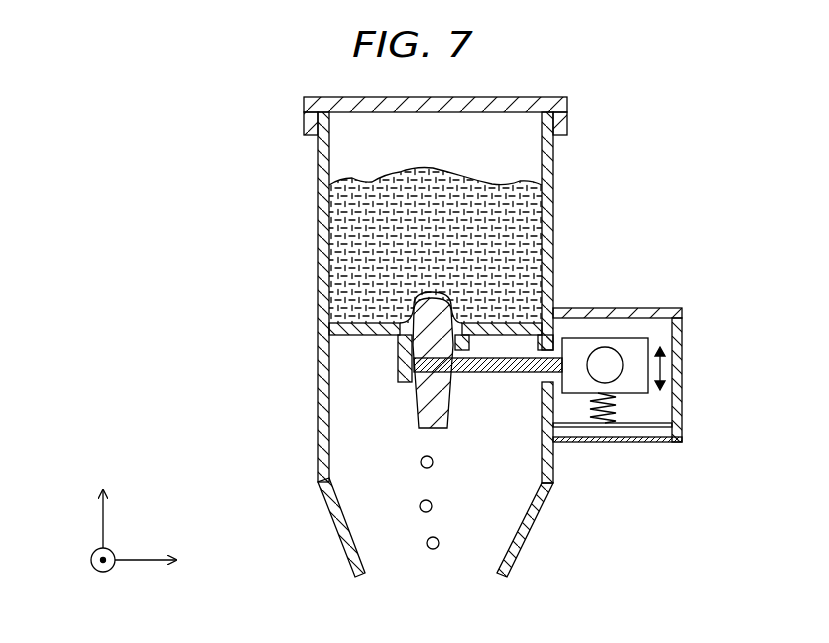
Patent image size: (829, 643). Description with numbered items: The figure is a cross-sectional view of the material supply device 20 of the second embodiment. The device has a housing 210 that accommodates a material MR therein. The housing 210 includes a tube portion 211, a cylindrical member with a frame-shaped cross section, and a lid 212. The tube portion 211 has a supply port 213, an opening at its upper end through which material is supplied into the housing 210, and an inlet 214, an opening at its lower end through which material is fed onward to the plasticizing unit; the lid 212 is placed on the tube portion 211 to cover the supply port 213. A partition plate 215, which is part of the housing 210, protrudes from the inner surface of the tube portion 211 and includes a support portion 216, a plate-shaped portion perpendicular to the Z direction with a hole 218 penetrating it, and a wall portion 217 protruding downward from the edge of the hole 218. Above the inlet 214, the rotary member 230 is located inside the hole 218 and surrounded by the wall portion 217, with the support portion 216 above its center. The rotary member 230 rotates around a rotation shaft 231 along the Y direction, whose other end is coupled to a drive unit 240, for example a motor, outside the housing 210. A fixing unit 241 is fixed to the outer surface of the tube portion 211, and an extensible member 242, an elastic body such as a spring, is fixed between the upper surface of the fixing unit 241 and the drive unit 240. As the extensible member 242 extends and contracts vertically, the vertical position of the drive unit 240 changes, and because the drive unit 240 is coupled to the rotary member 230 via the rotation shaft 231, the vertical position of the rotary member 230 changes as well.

The material supply device 20 is at (151, 117).
The material MR is at (336, 240).
The housing 210 is at (481, 339).
The tube portion 211 is at (465, 358).
The lid 212 is at (566, 122).
The supply port 213 is at (340, 103).
The inlet 214 is at (362, 572).
The partition plate 215 is at (362, 359).
The support portion 216 is at (400, 341).
The wall portion 217 is at (398, 365).
The hole 218 is at (414, 306).
The rotary member 230 is at (522, 428).
The rotation shaft 231 is at (493, 372).
The drive unit 240 is at (630, 338).
The fixing unit 241 is at (640, 442).
The extensible member 242 is at (618, 405).